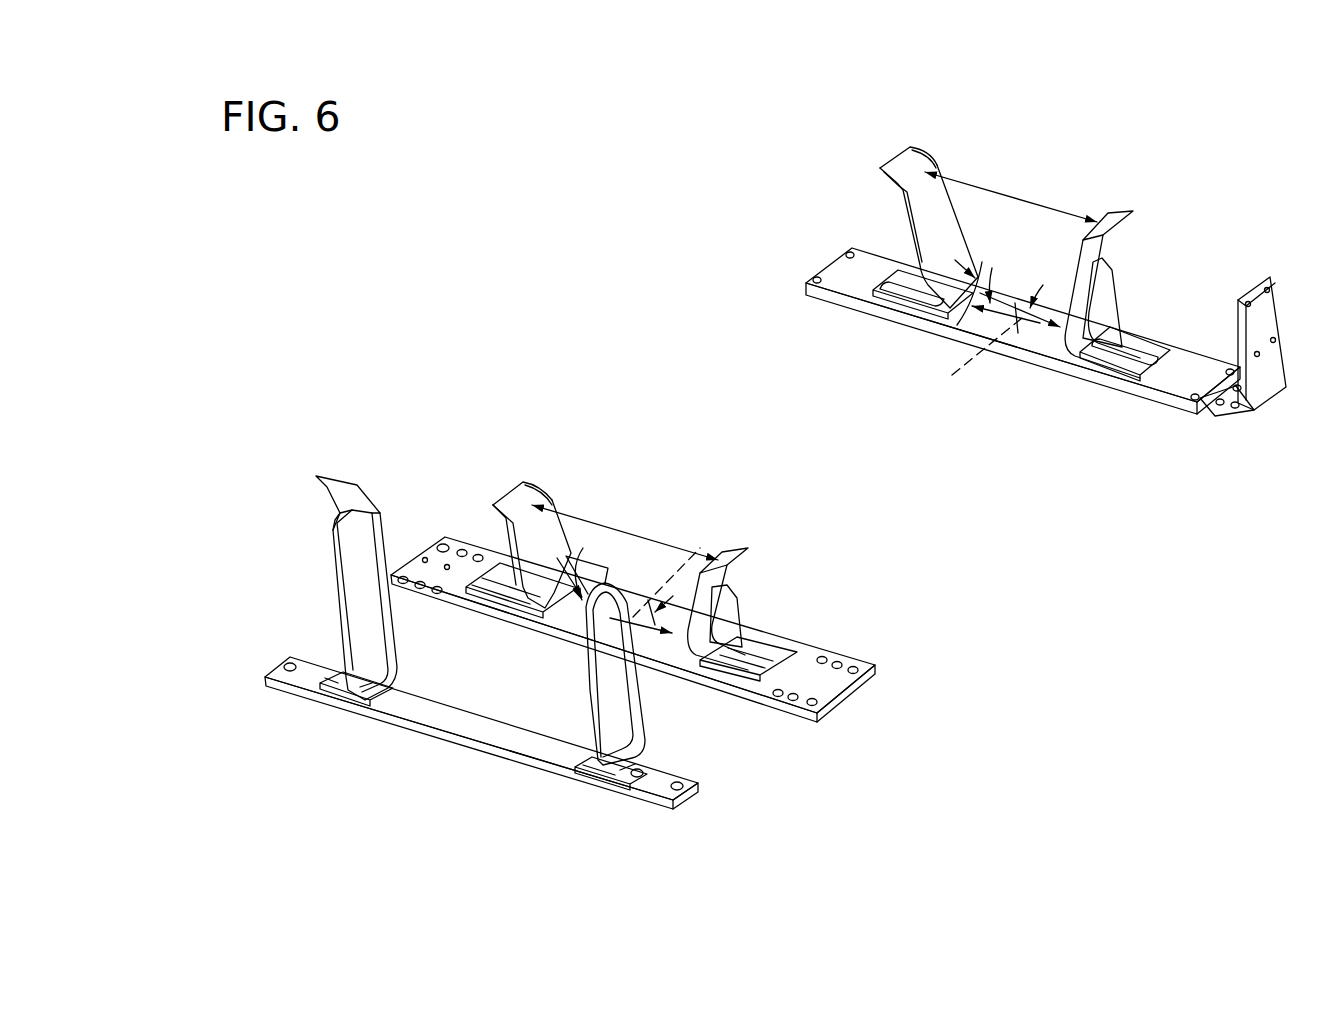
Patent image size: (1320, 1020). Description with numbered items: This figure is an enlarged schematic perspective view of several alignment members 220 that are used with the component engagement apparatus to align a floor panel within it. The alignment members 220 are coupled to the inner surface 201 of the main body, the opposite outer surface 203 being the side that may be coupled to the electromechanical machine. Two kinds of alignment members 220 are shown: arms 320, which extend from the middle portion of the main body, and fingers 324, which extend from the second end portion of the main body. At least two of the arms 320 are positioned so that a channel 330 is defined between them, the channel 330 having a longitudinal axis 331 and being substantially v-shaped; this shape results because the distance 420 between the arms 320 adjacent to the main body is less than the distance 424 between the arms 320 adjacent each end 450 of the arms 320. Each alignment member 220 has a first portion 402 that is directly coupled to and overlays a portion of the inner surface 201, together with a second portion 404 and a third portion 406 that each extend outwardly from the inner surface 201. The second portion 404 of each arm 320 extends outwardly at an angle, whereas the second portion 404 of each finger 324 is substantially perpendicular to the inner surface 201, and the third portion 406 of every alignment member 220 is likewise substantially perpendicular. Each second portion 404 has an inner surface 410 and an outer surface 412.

The alignment member 220 is at (737, 473).
The inner surface 201 is at (1015, 303).
The outer surface 203 is at (1138, 402).
The arm 320 is at (713, 473).
The finger 324 is at (297, 490).
The channel 330 is at (1001, 302).
The longitudinal axis 331 is at (975, 365).
The first portion 402 is at (910, 290).
The second portion 404 is at (910, 128).
The third portion 406 is at (1117, 298).
The inner surface 410 is at (928, 198).
The outer surface 412 is at (915, 225).
The distance 420 is at (1025, 322).
The distance 424 is at (1030, 196).
The end 450 is at (885, 155).